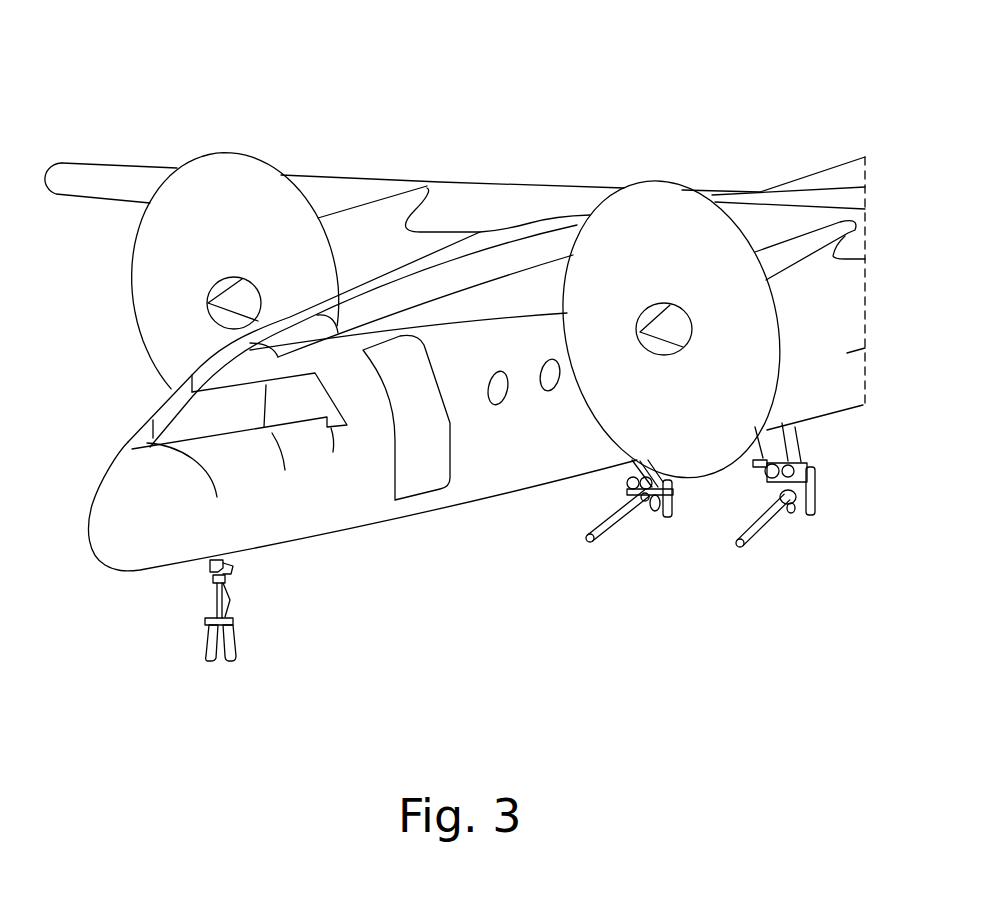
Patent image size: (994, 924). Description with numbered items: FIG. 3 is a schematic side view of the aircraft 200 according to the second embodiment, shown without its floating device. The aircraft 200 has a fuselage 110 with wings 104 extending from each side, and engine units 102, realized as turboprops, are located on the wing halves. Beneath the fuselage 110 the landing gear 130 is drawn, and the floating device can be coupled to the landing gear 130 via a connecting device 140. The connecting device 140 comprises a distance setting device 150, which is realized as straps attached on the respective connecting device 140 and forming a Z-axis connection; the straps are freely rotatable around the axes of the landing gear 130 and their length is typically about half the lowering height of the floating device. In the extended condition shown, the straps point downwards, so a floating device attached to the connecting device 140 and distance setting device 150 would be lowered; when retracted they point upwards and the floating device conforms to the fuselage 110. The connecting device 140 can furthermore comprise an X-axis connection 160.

The aircraft 200 is at (372, 72).
The engine units 102 is at (652, 180).
The wings 104 is at (316, 168).
The fuselage 110 is at (343, 538).
The landing gear 130 is at (185, 660).
The connecting device 140 is at (231, 624).
The distance setting device 150 is at (238, 647).
The X-axis connection 160 is at (588, 546).